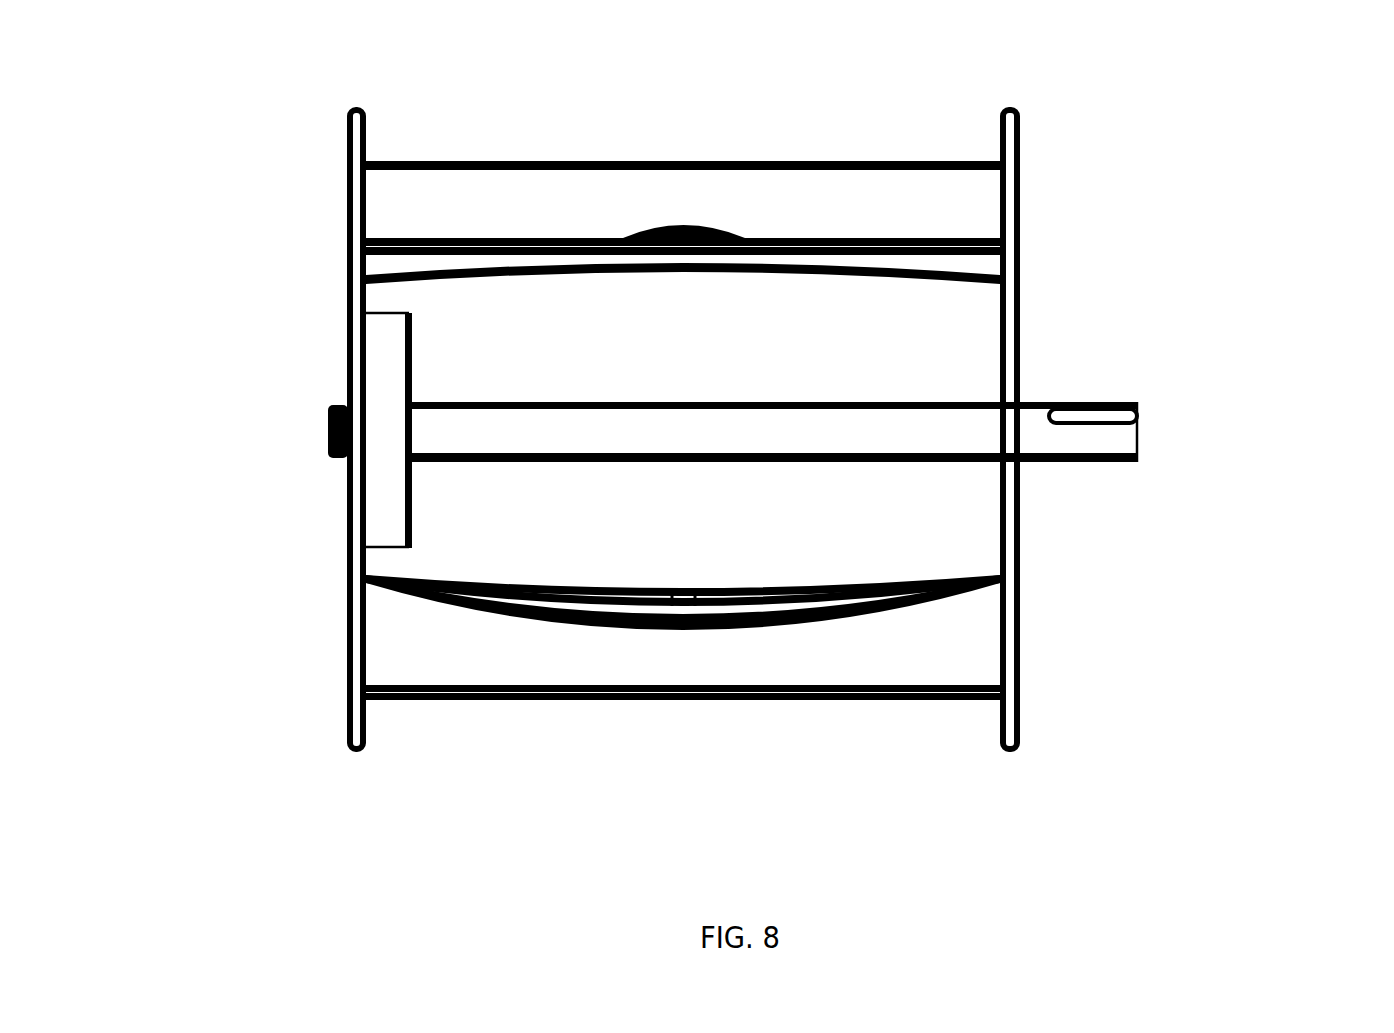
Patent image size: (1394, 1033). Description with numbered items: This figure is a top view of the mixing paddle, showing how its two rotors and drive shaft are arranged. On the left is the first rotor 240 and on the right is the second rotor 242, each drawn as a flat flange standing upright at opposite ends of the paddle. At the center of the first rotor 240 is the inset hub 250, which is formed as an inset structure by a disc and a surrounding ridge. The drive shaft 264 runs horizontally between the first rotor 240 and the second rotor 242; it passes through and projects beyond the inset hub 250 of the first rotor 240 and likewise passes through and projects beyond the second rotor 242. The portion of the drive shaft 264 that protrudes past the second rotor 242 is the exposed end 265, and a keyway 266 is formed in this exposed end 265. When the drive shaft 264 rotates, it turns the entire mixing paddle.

The first rotor 240 is at (352, 130).
The second rotor 242 is at (1005, 132).
The inset hub 250 is at (390, 488).
The drive shaft 264 is at (744, 432).
The exposed end 265 is at (1041, 450).
The keyway 266 is at (1052, 410).